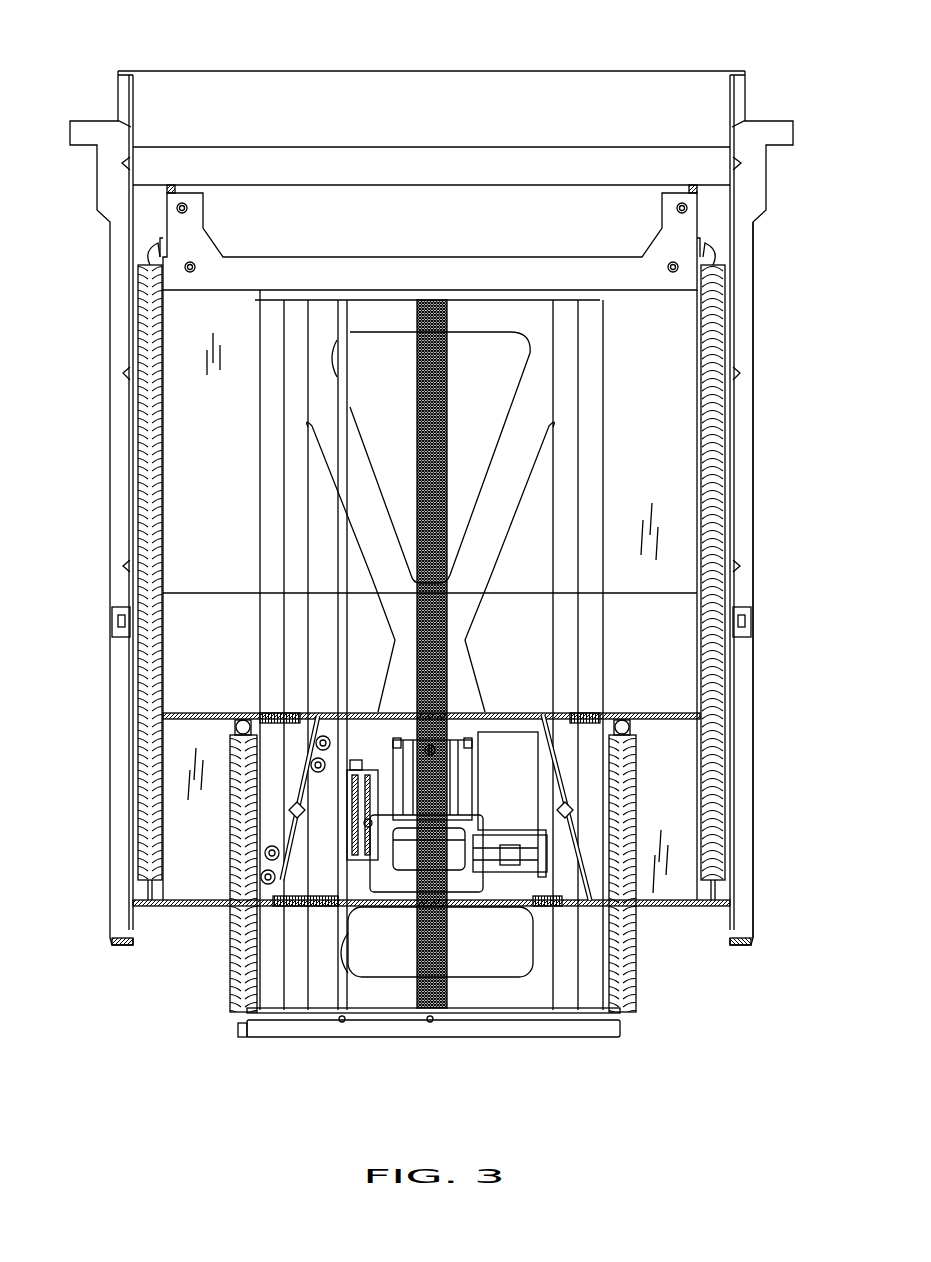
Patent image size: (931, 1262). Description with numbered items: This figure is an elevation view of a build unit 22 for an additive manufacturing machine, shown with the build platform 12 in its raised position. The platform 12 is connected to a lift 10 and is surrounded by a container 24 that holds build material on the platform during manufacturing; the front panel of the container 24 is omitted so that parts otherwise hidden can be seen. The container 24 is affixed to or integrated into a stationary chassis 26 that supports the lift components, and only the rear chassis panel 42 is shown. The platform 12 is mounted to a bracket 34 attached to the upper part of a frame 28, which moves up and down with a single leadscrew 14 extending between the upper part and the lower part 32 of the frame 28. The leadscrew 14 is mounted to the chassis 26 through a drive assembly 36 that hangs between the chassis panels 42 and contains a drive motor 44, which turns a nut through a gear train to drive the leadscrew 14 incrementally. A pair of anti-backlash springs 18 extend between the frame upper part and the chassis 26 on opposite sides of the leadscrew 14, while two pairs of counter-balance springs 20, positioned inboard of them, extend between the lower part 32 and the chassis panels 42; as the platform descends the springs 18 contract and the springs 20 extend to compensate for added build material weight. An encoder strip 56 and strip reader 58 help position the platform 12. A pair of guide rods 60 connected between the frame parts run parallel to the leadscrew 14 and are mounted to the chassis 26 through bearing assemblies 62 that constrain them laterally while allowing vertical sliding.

The lift 10 is at (108, 1012).
The build platform 12 is at (393, 160).
The leadscrew 14 is at (447, 358).
The anti-backlash springs 18 is at (710, 662).
The counter-balance springs 20 is at (235, 833).
The build unit 22 is at (85, 74).
The container 24 is at (270, 85).
The chassis 26 is at (742, 833).
The frame 28 is at (595, 377).
The lower part of frame 32 is at (515, 1020).
The bracket 34 is at (378, 272).
The drive assembly 36 is at (389, 906).
The chassis panel 42 is at (207, 742).
The drive motor 44 is at (510, 745).
The encoder strip 56 is at (344, 680).
The strip reader 58 is at (358, 773).
The guide rods 60 is at (298, 512).
The bearing assembly 62 is at (568, 778).